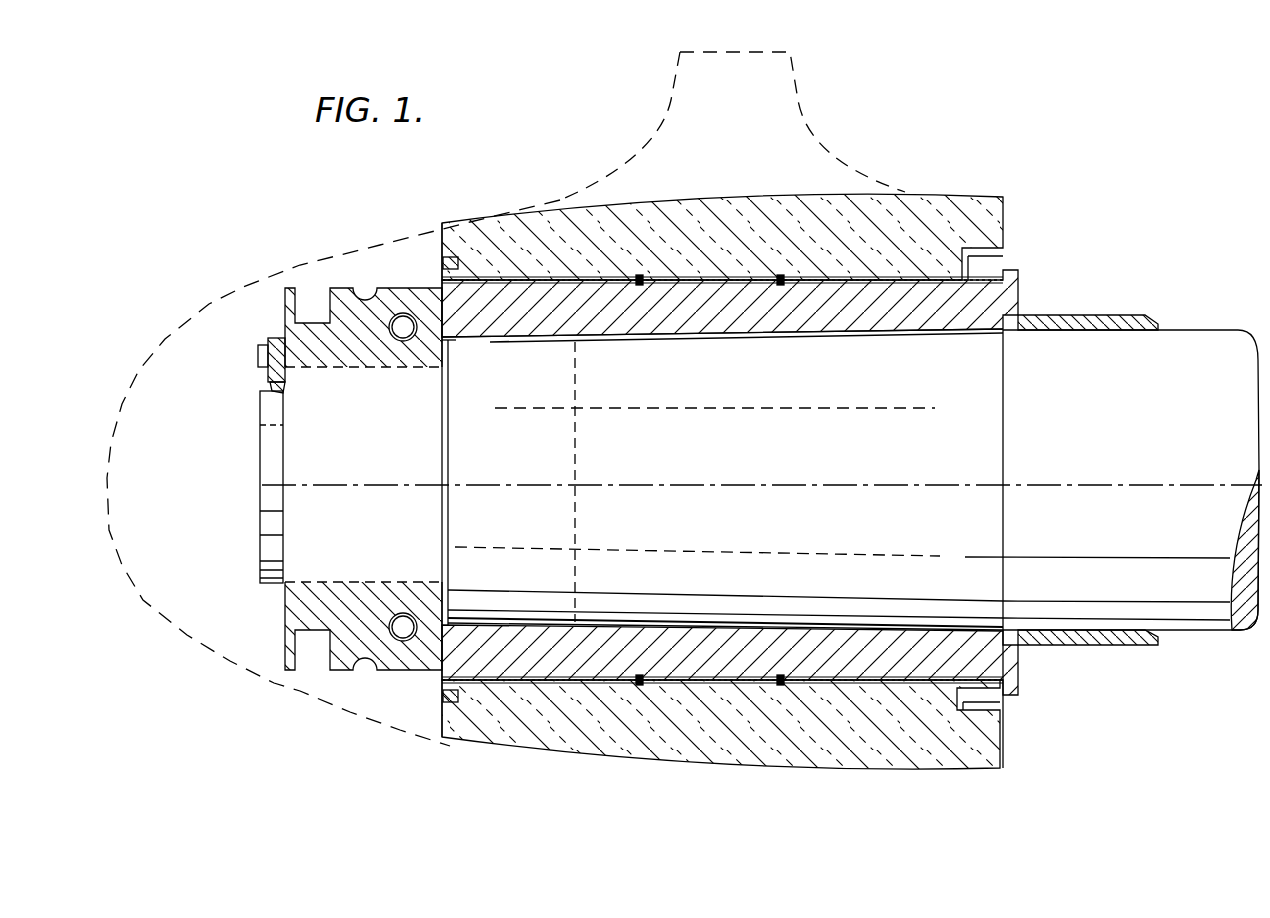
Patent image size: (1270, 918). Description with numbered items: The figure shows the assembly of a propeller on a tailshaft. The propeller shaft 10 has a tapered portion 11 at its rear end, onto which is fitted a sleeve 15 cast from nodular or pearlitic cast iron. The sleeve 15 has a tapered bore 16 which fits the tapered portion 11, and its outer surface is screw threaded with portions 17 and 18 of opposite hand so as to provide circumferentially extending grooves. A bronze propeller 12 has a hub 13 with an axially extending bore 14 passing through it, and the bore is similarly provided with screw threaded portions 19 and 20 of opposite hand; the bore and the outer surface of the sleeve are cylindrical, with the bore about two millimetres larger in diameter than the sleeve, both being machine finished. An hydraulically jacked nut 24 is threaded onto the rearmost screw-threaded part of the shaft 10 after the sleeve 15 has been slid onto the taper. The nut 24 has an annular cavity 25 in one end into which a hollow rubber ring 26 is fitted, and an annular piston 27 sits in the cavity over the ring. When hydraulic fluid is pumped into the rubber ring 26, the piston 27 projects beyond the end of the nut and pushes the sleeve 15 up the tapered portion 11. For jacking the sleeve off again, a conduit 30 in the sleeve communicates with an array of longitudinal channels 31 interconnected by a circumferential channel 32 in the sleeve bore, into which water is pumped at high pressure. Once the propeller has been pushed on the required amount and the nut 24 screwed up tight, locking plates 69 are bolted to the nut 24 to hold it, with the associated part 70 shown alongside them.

The propeller shaft 10 is at (1200, 344).
The tapered portion 11 is at (798, 458).
The bronze propeller 12 is at (793, 74).
The hub 13 is at (980, 206).
The axially-extending bore 14 is at (488, 284).
The sleeve 15 is at (983, 308).
The tapered bore 16 is at (460, 343).
The screw threaded portion 17 is at (548, 290).
The screw threaded portion 18 is at (724, 288).
The screw threaded portion 19 is at (527, 273).
The screw threaded portion 20 is at (706, 275).
The hydraulically-jacked nut 24 is at (340, 297).
The annular cavity 25 is at (423, 348).
The hollow rubber ring 26 is at (398, 313).
The annular piston 27 is at (424, 312).
The conduit 30 is at (476, 628).
The longitudinal channels 31 is at (741, 411).
The circumferential channel 32 is at (580, 457).
The locking plates 69 is at (264, 350).
The lock piece 70 is at (268, 383).